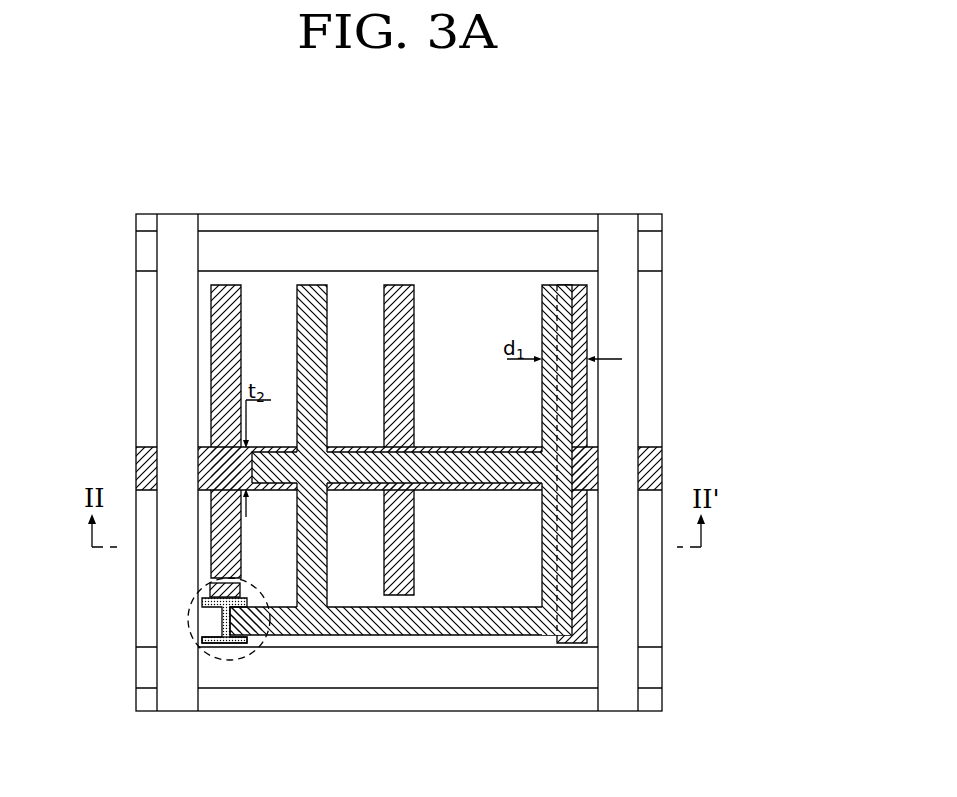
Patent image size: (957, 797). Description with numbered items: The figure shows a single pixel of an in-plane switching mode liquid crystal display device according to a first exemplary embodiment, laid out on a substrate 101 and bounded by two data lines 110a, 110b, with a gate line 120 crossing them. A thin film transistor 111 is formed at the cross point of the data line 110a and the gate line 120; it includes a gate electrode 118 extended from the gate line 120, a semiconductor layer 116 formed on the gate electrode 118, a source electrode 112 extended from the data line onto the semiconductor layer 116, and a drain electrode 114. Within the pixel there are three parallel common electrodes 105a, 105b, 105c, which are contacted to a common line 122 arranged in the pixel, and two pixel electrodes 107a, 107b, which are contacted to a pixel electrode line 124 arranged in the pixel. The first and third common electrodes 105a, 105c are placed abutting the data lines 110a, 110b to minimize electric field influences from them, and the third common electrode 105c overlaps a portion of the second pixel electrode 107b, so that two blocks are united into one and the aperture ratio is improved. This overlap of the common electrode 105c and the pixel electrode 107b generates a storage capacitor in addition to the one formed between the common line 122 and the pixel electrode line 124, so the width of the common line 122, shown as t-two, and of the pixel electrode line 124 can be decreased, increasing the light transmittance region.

The substrate 101 is at (690, 238).
The first common electrode 105a is at (227, 283).
The second common electrode 105b is at (398, 283).
The third common electrode 105c is at (580, 283).
The first pixel electrode 107a is at (312, 283).
The second pixel electrode 107b is at (555, 283).
The data line 110a is at (177, 704).
The data line 110b is at (617, 697).
The thin film transistor 111 is at (192, 635).
The source electrode 112 is at (205, 621).
The drain electrode 114 is at (259, 636).
The semiconductor layer 116 is at (228, 647).
The gate electrode 118 is at (212, 588).
The gate line 120 is at (470, 677).
The common line 122 is at (137, 459).
The pixel electrode line 124 is at (593, 451).